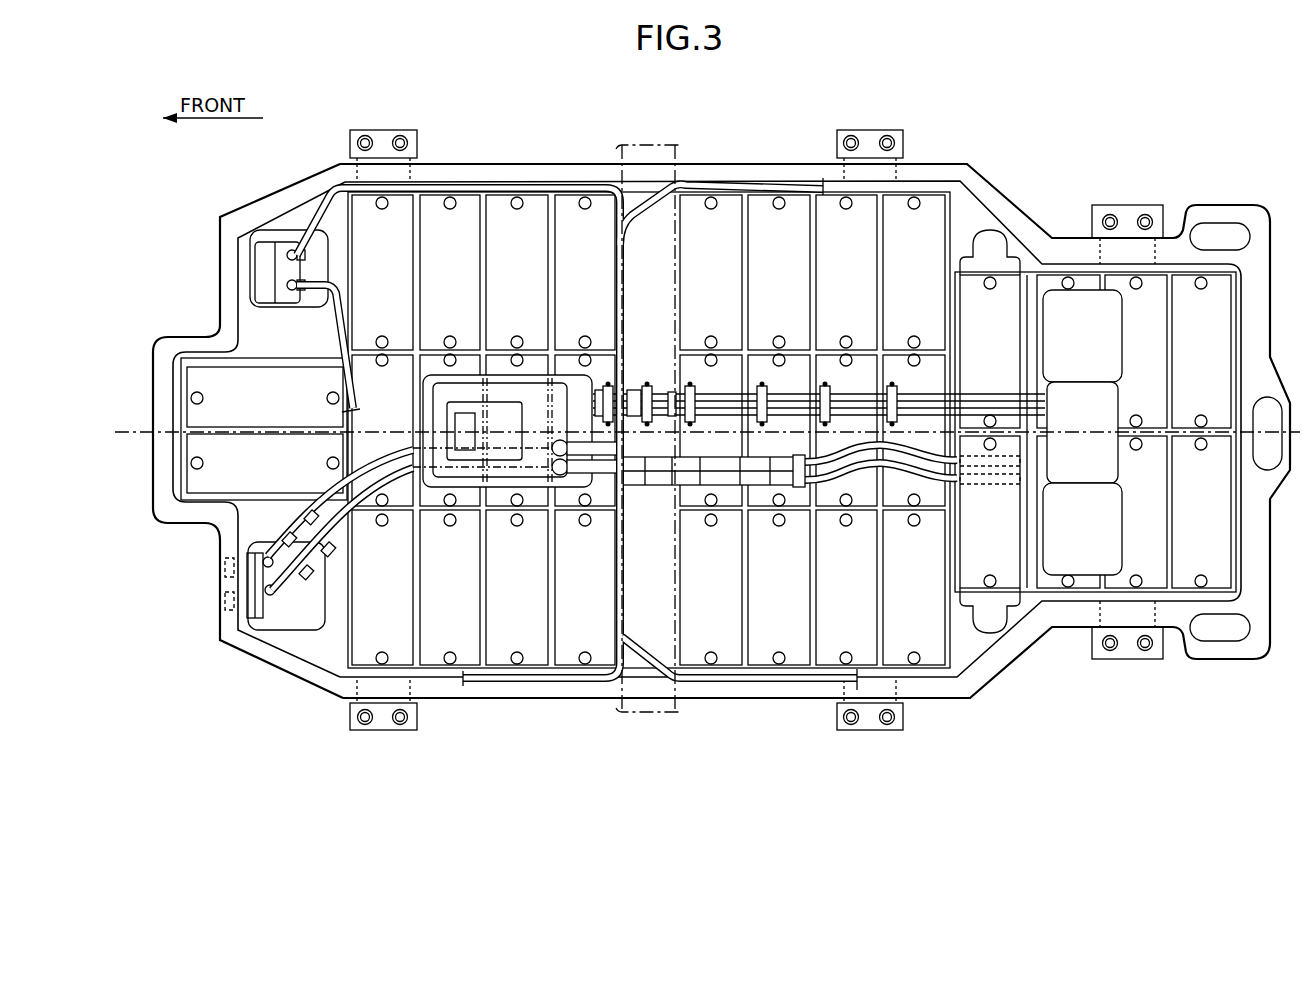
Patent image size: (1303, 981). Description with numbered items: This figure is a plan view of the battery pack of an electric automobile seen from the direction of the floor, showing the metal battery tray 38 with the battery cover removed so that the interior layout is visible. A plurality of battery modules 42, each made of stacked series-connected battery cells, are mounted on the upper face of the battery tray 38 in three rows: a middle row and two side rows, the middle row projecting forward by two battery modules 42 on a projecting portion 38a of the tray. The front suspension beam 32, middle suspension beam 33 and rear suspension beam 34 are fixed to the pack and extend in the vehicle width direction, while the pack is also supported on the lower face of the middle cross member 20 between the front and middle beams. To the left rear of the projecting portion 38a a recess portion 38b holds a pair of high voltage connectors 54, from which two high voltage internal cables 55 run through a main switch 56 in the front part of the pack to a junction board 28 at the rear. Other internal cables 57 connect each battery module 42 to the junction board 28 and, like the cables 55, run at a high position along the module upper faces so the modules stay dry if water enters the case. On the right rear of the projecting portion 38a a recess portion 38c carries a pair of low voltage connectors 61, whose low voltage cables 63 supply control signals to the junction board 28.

The middle cross member 20 is at (678, 146).
The junction board 28 is at (1072, 443).
The front suspension beam 32 is at (383, 137).
The middle suspension beam 33 is at (872, 137).
The rear suspension beam 34 is at (1128, 215).
The battery tray 38 is at (566, 158).
The projecting portion 38a is at (158, 470).
The recess portion 38b is at (300, 622).
The recess portion 38c is at (273, 242).
The battery module 42 is at (1214, 511).
The high voltage connector 54 is at (228, 570).
The high voltage internal cable 55 is at (330, 512).
The main switch 56 is at (492, 439).
The internal cable 57 is at (800, 415).
The low voltage connector 61 is at (268, 283).
The low voltage cable 63 is at (500, 184).